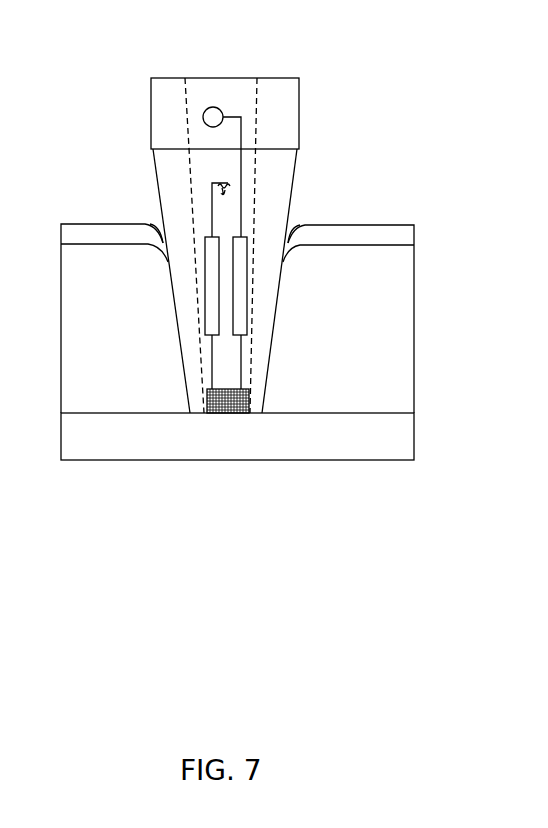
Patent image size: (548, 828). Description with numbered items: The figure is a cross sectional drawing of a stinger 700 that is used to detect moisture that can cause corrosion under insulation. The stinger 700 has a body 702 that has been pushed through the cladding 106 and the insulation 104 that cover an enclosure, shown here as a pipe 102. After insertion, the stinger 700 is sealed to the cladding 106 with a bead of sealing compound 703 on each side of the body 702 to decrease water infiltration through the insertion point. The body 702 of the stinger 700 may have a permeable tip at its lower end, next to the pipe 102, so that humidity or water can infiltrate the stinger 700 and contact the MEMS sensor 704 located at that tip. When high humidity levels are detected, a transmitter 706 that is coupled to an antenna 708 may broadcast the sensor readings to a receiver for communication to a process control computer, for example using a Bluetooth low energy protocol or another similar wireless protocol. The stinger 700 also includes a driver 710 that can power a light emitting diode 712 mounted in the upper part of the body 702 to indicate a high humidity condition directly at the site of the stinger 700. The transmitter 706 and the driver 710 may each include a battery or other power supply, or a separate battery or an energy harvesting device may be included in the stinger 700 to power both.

The stinger 700 is at (250, 740).
The pipe 102 is at (385, 412).
The insulation 104 is at (390, 308).
The cladding 106 is at (366, 232).
The body 702 is at (298, 150).
The bead of sealing compound 703 is at (160, 228).
The MEMS sensor 704 is at (228, 414).
The transmitter 706 is at (204, 292).
The antenna 708 is at (220, 178).
The driver 710 is at (250, 277).
The light emitting diode 712 is at (207, 108).